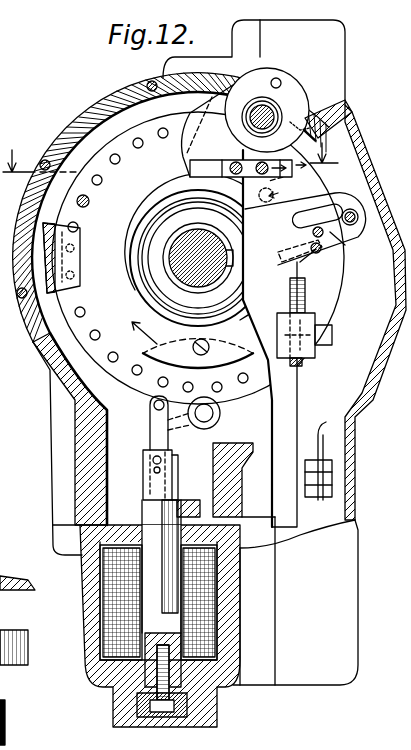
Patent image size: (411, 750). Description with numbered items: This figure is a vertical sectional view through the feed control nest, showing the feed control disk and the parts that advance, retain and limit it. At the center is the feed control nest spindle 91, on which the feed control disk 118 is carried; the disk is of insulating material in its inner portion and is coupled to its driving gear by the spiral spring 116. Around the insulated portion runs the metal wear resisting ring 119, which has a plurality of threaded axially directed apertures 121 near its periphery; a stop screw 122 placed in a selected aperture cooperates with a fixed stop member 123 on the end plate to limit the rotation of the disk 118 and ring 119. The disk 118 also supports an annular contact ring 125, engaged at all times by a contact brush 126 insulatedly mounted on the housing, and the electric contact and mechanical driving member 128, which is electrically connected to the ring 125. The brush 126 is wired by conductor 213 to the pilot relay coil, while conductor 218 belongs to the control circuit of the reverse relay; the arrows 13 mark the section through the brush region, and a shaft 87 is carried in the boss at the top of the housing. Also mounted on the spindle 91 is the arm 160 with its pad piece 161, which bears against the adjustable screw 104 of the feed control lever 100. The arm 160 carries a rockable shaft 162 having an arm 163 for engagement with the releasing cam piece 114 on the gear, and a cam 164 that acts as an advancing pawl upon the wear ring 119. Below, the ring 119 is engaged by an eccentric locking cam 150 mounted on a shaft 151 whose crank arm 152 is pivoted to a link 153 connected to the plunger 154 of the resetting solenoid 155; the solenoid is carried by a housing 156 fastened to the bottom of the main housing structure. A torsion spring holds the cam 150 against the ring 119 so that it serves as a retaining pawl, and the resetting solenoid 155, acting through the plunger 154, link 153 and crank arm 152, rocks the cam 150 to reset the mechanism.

The section line 13- 13 is at (175, 152).
The shaft 87 is at (265, 115).
The conductor 213 is at (330, 122).
The annular contact ring 125 is at (245, 122).
The contact brush 126 is at (241, 158).
The threaded axially directed apertures 121 is at (136, 141).
The central spindle 91 is at (188, 244).
The stop screw 122 is at (88, 206).
The fixed stop member 123 is at (72, 252).
The spiral spring 116 is at (142, 268).
The feed control disk 118 is at (180, 258).
The wear resisting outer ring 119 is at (125, 365).
The electric contact and mechanical driving member 128 is at (193, 350).
The arm 160 is at (350, 257).
The pad piece 161 is at (308, 242).
The rockable shaft 162 is at (353, 213).
The arm 163 is at (318, 216).
The cam 164 is at (348, 237).
The adjustable screw 104 is at (307, 293).
The feed control lever 100 is at (292, 388).
The eccentric locking cam 150 is at (219, 409).
The shaft 151 is at (213, 416).
The conductor 218 is at (327, 430).
The link 153 is at (154, 437).
The crank arm 152 is at (176, 420).
The plunger 154 is at (157, 515).
The resetting solenoid 155 is at (115, 595).
The housing 156 is at (100, 645).
The releasing cam piece 114 is at (0, 686).